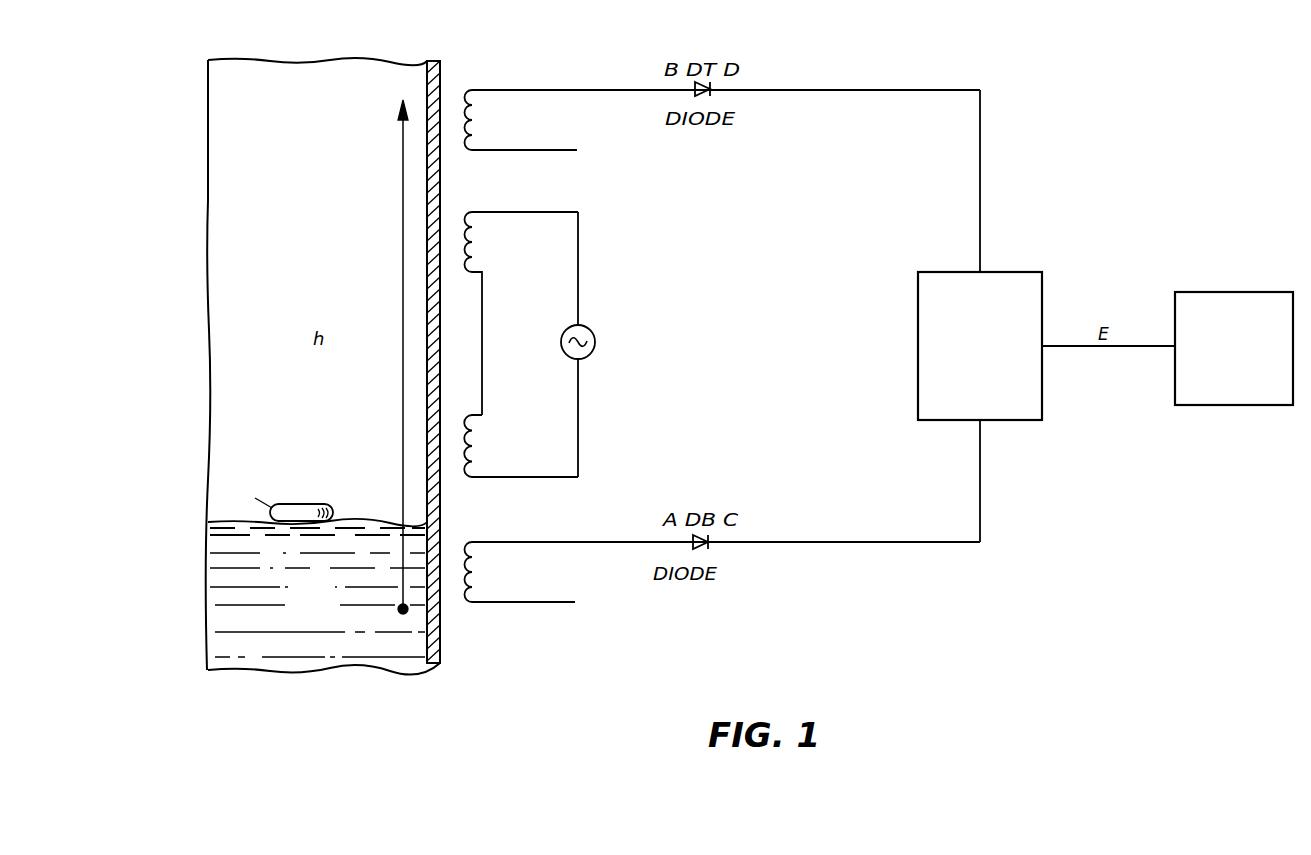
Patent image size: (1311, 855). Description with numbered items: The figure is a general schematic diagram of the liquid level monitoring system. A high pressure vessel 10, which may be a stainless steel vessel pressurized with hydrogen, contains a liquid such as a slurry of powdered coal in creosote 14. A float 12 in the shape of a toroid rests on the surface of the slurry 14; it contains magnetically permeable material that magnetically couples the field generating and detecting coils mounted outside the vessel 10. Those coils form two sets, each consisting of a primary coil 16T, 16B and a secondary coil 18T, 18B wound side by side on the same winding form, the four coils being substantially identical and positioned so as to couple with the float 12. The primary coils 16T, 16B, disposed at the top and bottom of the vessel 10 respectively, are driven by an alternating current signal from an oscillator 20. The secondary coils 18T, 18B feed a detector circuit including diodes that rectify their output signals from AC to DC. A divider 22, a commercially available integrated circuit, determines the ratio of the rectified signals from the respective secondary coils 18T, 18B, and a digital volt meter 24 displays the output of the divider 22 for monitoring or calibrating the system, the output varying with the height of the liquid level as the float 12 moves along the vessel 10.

The high pressure vessel 10 is at (443, 73).
The float 12 is at (330, 506).
The slurry 14 is at (330, 609).
The top primary coil 16T is at (472, 240).
The bottom primary coil 16B is at (472, 445).
The top secondary coil 18T is at (475, 118).
The bottom secondary coil 18B is at (475, 572).
The oscillator 20 is at (595, 335).
The divider 22 is at (992, 327).
The digital volt meter 24 is at (1248, 340).